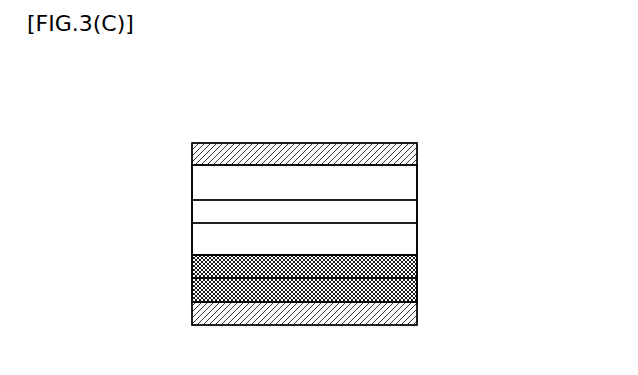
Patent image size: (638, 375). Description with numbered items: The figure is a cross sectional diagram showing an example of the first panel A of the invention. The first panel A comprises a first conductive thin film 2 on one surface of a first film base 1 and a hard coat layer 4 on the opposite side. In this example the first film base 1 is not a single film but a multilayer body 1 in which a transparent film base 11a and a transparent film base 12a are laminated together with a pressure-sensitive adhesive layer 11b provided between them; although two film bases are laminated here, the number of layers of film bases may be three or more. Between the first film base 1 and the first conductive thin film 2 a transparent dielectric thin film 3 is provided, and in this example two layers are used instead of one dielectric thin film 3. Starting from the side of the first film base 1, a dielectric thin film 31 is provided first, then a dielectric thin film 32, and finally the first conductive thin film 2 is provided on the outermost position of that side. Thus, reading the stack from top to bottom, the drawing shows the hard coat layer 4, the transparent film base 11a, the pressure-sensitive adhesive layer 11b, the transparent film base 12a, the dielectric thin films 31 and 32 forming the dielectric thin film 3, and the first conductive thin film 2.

The first panel A is at (453, 109).
The hard coat layer 4 is at (417, 158).
The first film base 1 is at (522, 170).
The transparent film base 11a is at (403, 184).
The pressure-sensitive adhesive layer 11b is at (405, 212).
The transparent film base 12a is at (405, 242).
The transparent dielectric thin film 3 is at (522, 255).
The dielectric thin film 31 is at (417, 271).
The dielectric thin film 32 is at (417, 295).
The first conductive thin film 2 is at (417, 320).